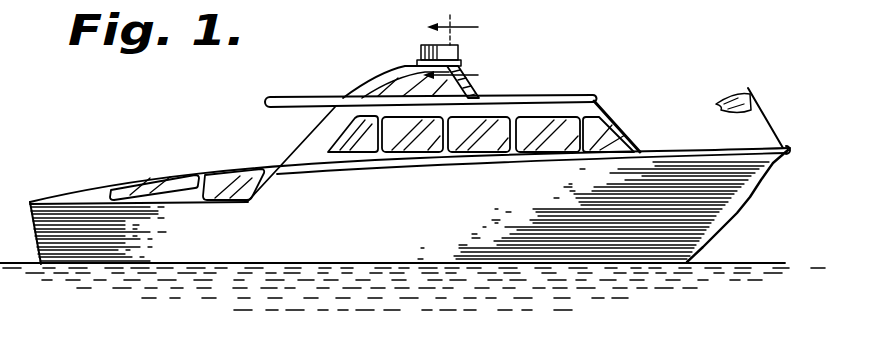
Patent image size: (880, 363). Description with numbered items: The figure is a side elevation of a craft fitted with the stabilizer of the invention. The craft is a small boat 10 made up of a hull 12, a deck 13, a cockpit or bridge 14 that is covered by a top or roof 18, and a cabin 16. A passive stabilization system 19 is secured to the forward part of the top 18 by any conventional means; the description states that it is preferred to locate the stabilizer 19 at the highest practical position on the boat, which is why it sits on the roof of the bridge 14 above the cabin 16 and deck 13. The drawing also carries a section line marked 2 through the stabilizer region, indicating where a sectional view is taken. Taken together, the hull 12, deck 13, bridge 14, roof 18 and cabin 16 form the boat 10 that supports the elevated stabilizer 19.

The small boat 10 is at (186, 168).
The hull 12 is at (334, 240).
The deck 13 is at (697, 150).
The cockpit or bridge 14 is at (397, 68).
The cabin 16 is at (608, 130).
The top or roof 18 is at (456, 67).
The passive stabilization system 19 is at (426, 45).
The section line 2- 2 is at (461, 46).